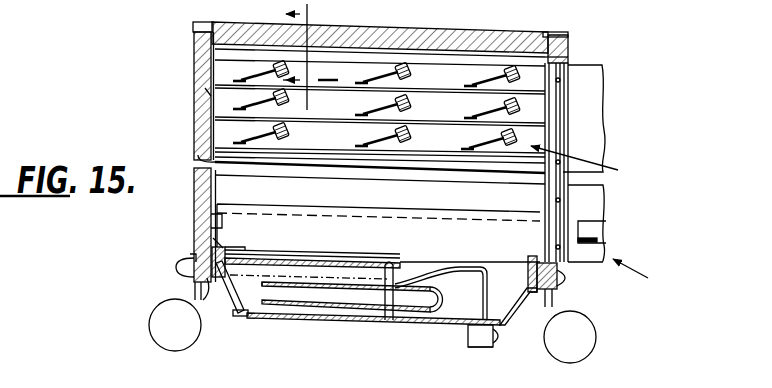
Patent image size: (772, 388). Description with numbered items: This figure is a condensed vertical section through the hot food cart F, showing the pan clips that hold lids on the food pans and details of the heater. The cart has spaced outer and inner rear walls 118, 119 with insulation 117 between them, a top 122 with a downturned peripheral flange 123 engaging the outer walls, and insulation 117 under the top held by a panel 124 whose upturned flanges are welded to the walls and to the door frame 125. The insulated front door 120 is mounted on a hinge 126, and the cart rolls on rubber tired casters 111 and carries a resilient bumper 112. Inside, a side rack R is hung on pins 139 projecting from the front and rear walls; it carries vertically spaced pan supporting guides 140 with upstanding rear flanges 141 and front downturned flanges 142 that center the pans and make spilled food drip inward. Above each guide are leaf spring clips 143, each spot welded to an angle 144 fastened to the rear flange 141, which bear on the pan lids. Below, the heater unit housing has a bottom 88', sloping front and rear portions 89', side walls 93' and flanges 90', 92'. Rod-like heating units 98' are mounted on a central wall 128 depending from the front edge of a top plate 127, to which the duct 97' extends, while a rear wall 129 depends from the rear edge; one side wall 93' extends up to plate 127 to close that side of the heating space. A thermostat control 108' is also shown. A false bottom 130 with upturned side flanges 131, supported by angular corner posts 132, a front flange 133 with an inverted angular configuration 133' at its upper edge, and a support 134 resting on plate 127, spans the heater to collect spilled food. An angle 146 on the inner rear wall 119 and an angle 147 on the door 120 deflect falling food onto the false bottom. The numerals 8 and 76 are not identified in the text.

The air flow arrows 8 is at (303, 97).
The center line 76 is at (320, 55).
The bottom 88' is at (373, 331).
The upwardly sloping front and rear portions 89' is at (377, 313).
The flange 90' is at (570, 337).
The flange 92' is at (174, 290).
The side walls 93' is at (376, 309).
The duct 97' is at (453, 338).
The rod-like heating units 98' is at (284, 317).
The control 108' is at (490, 356).
The rubber tired casters 111 is at (170, 338).
The bumper 112 is at (177, 267).
The insulation 117 is at (376, 30).
The outer rear wall 118 is at (200, 117).
The inner rear wall 119 is at (212, 62).
The front door 120 is at (598, 116).
The top 122 is at (440, 33).
The downturned peripheral flange 123 is at (194, 33).
The panel 124 is at (249, 23).
The door frame 125 is at (570, 52).
The hinge 126 is at (563, 135).
The top plate 127 is at (312, 264).
The central wall 128 is at (392, 323).
The rear wall 129 is at (196, 258).
The false bottom 130 is at (446, 256).
The upturned side flanges 131 is at (436, 196).
The angular corner posts 132 is at (215, 260).
The front flange 133 is at (446, 268).
The inverted angular configuration 133' is at (525, 262).
The support 134 is at (260, 250).
The pins 139 is at (206, 92).
The pan supporting guides 140 is at (346, 147).
The upstanding rear flanges 141 is at (456, 66).
The downturned flange 142 is at (346, 152).
The leaf spring clips 143 is at (469, 148).
The angle 144 is at (475, 103).
The angle 146 is at (213, 222).
The angle 147 is at (591, 233).
The side rack R is at (582, 164).
The hot food cart F is at (637, 273).